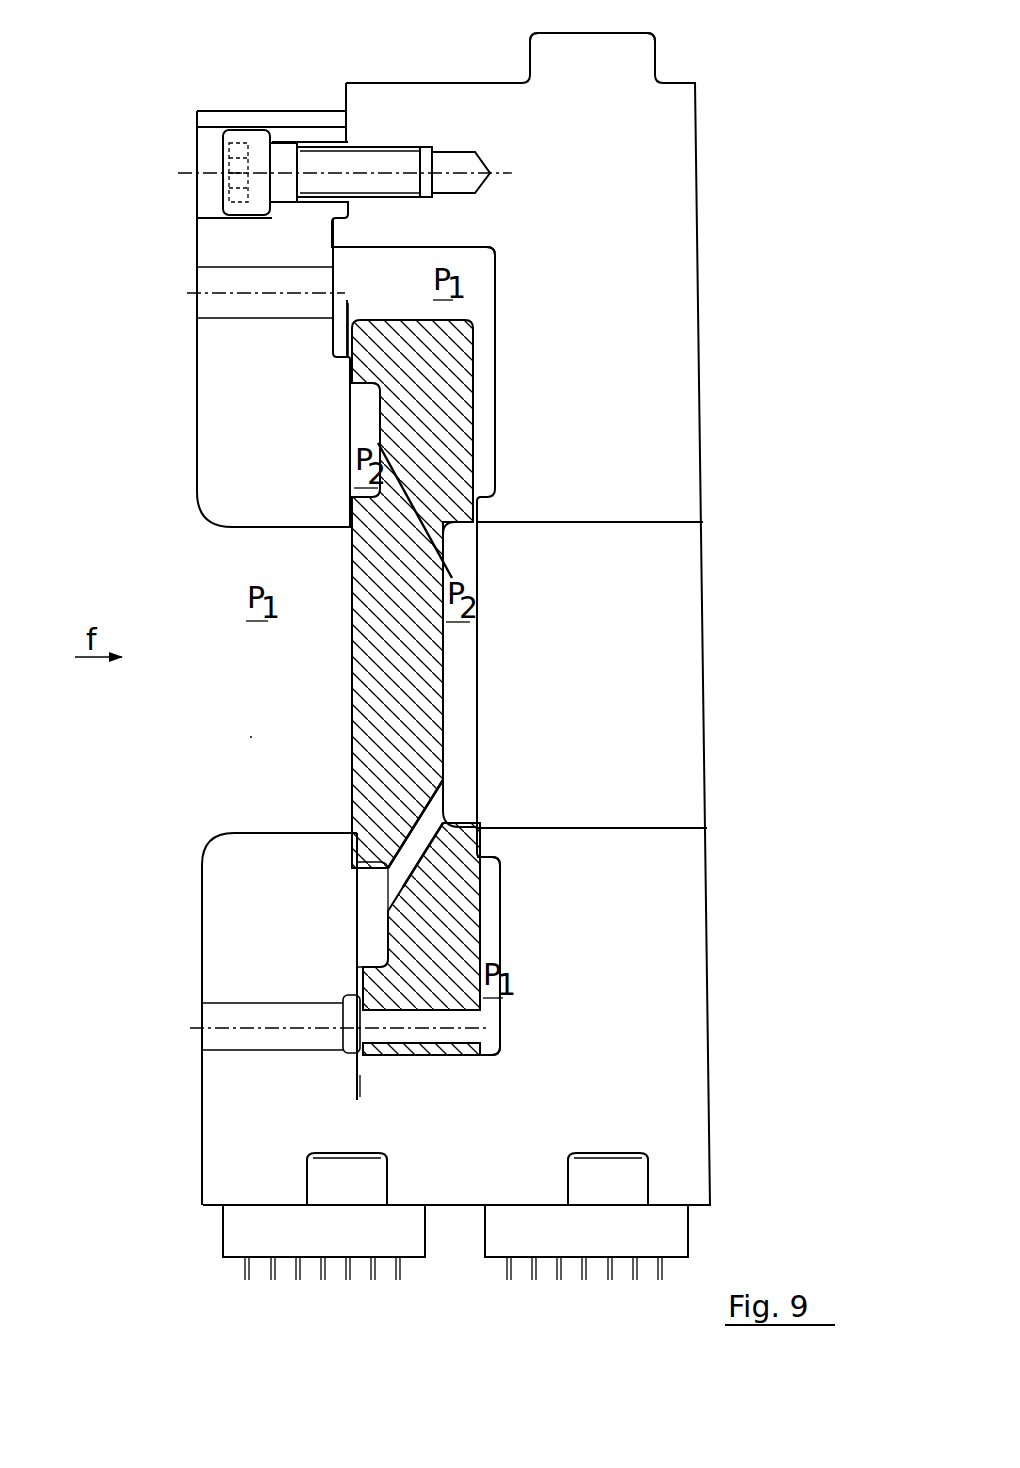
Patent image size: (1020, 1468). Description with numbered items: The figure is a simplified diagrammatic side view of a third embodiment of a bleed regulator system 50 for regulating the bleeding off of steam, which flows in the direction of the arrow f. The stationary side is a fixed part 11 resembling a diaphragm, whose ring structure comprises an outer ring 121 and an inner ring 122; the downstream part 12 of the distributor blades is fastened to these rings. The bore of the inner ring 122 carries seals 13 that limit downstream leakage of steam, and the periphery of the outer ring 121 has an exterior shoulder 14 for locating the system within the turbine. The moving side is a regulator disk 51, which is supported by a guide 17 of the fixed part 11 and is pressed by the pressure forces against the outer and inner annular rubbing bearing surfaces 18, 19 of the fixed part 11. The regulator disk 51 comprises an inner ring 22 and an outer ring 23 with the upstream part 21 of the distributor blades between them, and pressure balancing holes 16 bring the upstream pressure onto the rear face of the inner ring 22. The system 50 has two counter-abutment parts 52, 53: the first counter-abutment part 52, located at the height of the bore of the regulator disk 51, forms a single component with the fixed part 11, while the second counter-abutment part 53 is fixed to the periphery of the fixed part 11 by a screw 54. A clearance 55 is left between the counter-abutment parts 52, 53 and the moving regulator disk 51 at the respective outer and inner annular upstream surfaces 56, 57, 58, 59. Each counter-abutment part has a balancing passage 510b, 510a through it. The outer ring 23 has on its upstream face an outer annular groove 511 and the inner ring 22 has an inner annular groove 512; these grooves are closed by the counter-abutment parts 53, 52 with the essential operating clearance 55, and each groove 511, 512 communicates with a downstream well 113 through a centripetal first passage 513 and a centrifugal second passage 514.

The fixed part 11 is at (702, 228).
The downstream part of the distributor blades 12 is at (587, 750).
The seals 13 is at (293, 1228).
The exterior shoulder 14 is at (595, 58).
The pressure balancing holes 16 is at (337, 1017).
The guide 17 is at (415, 1060).
The outer annular rubbing bearing surface 18 is at (480, 509).
The inner annular rubbing bearing surface 19 is at (485, 842).
The upstream part of the distributor blades 21 is at (375, 638).
The inner ring 22 is at (453, 905).
The outer ring 23 is at (433, 397).
The bleed regulator system 50 is at (250, 737).
The regulator disk 51 is at (355, 692).
The first counter-abutment part 52 is at (242, 882).
The second counter-abutment part 53 is at (270, 483).
The screw 54 is at (230, 168).
The clearance 55 is at (403, 305).
The outer annular upstream surface 56 is at (346, 375).
The outer annular upstream surface 57 is at (346, 510).
The inner annular upstream surface 58 is at (353, 850).
The inner annular upstream surface 59 is at (353, 979).
The downstream well 113 is at (465, 690).
The outer ring 121 is at (615, 347).
The inner ring 122 is at (603, 1050).
The balancing passage 510a is at (268, 292).
The balancing passage 510b is at (245, 1038).
The outer annular groove 511 is at (365, 427).
The inner annular groove 512 is at (372, 930).
The centripetal first passage 513 is at (400, 490).
The centrifugal second passage 514 is at (400, 873).